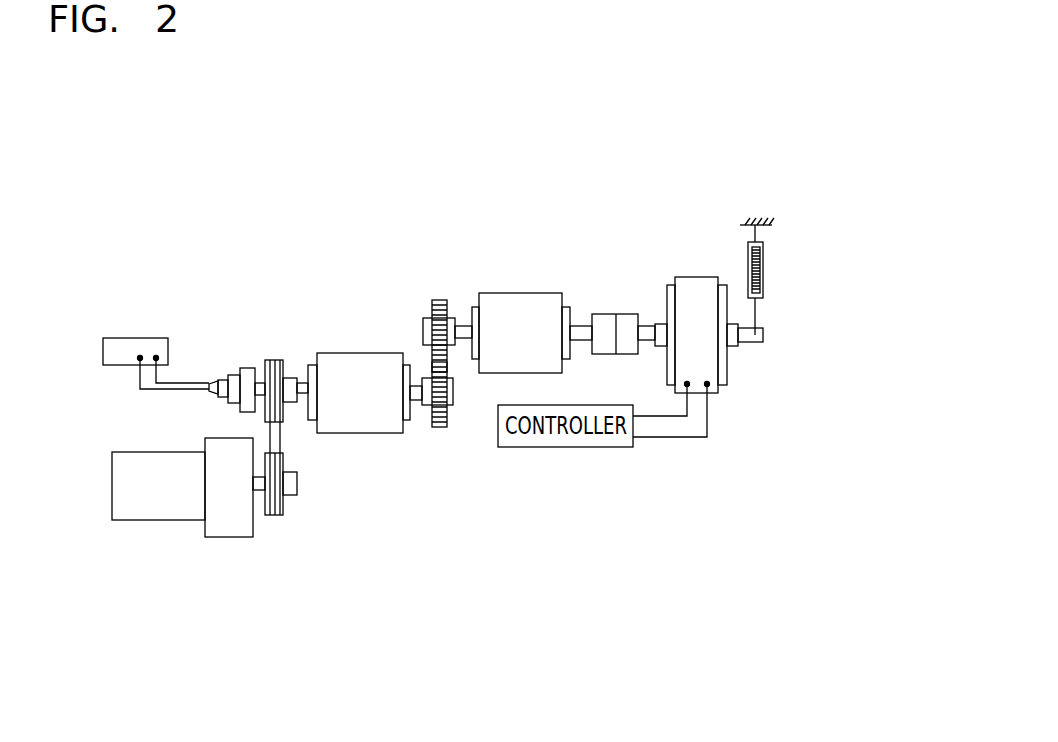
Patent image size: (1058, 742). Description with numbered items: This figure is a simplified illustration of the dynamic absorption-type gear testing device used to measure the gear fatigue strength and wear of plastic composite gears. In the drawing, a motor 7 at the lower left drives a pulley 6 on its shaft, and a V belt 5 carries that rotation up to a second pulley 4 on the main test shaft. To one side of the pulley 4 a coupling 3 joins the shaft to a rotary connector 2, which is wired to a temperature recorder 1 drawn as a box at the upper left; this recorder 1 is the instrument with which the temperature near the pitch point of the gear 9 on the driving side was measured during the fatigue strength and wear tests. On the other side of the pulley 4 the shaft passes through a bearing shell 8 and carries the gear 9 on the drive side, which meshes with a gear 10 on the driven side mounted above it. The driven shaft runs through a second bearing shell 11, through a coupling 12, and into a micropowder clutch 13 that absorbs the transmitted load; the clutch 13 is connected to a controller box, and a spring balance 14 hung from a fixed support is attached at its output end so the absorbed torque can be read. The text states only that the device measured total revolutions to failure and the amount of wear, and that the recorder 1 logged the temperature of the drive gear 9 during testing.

The temperature recorder 1 is at (111, 340).
The rotary connector 2 is at (217, 383).
The coupling 3 is at (250, 368).
The pulley 4 is at (282, 360).
The V belt 5 is at (275, 435).
The pulley 6 is at (283, 515).
The motor 7 is at (180, 513).
The bearing shell 8 is at (382, 425).
The gear on the driving side 9 is at (438, 427).
The gear on driven side 10 is at (437, 300).
The bearing shell 11 is at (483, 303).
The coupling 12 is at (597, 320).
The micropowder clutch 13 is at (697, 285).
The spring balance 14 is at (748, 242).